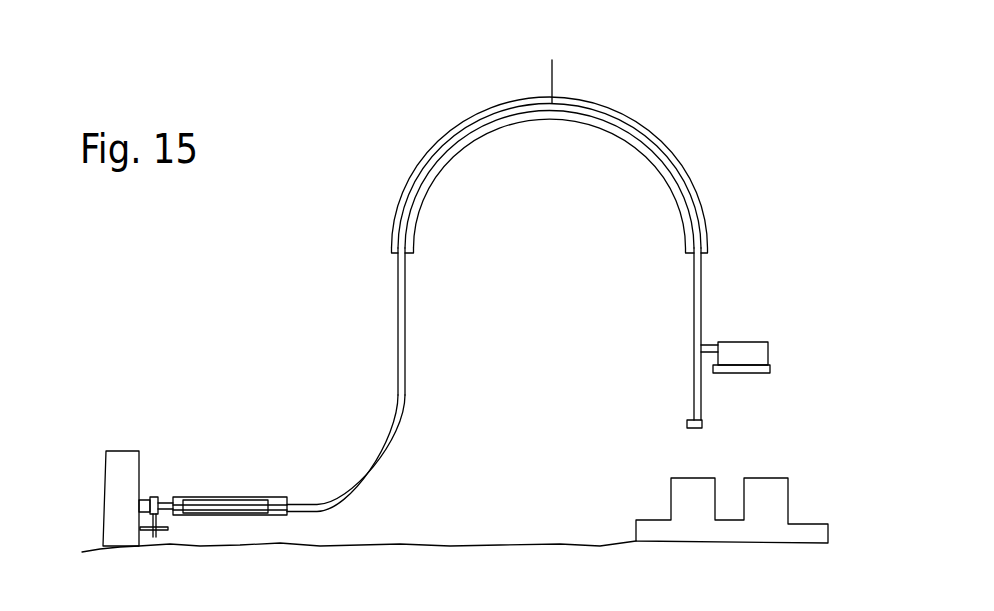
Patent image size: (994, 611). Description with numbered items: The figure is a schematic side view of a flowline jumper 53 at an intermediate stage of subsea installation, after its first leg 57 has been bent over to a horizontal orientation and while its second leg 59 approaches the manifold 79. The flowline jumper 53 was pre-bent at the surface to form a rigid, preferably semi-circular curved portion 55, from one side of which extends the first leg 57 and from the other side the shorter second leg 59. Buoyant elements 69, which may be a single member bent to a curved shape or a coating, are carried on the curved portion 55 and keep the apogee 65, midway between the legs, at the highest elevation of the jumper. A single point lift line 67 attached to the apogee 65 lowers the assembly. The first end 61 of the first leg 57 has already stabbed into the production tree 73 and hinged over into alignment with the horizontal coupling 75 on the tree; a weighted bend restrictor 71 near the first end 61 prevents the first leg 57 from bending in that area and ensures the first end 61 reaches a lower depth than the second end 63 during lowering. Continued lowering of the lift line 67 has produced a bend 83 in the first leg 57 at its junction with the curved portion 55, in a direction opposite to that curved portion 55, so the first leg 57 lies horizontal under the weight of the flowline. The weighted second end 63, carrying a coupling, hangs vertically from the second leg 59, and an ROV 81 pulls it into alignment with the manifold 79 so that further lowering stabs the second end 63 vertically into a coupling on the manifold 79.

The flowline jumper 53 is at (360, 281).
The curved portion 55 is at (470, 137).
The first leg 57 is at (405, 388).
The second leg 59 is at (701, 285).
The first end 61 is at (153, 497).
The second end 63 is at (688, 420).
The apogee 65 is at (558, 103).
The lift line 67 is at (551, 76).
The buoyant elements 69 is at (413, 167).
The bend restrictor 71 is at (214, 497).
The production tree 73 is at (125, 458).
The horizontal coupling 75 is at (144, 497).
The manifold 79 is at (772, 485).
The ROV 81 is at (740, 348).
The bend 83 is at (340, 500).